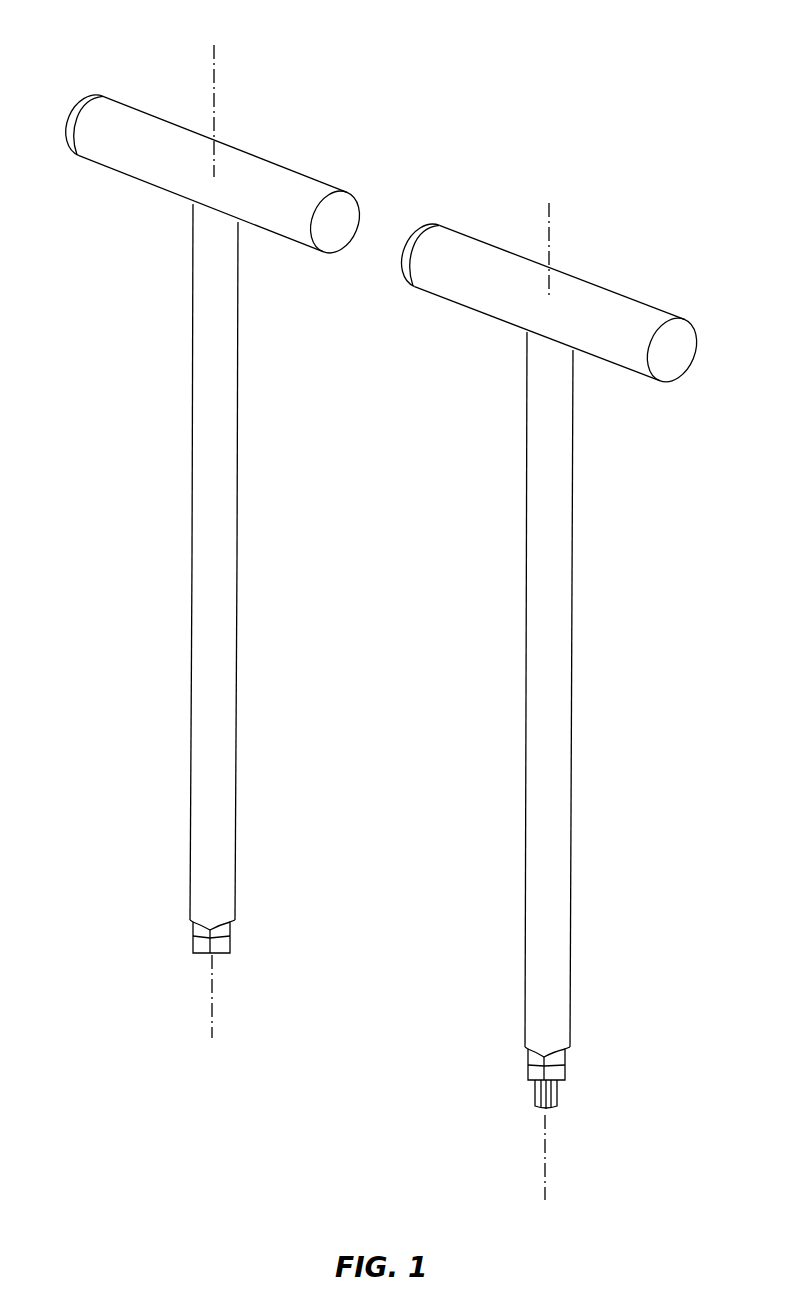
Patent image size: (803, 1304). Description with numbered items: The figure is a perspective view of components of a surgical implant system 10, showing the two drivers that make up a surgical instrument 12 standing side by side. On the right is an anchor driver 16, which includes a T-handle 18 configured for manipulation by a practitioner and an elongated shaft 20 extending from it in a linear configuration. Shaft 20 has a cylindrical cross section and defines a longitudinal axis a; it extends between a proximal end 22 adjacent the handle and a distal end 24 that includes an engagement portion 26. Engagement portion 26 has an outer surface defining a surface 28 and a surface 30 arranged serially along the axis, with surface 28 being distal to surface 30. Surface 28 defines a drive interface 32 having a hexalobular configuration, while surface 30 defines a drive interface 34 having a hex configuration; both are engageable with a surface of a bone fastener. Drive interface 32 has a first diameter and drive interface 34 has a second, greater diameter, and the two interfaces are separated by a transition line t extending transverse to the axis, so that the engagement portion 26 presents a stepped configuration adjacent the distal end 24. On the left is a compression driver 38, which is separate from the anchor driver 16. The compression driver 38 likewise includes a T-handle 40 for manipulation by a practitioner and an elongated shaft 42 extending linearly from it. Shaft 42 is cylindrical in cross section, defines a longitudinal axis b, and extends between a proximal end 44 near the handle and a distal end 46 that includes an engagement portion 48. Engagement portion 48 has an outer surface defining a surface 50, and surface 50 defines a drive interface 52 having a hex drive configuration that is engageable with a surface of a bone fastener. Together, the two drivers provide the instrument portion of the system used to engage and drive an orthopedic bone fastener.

The surgical implant system 10 is at (721, 771).
The surgical instrument 12 is at (516, 66).
The anchor driver 16 is at (648, 606).
The T-handle 18 is at (602, 303).
The elongated shaft 20 is at (533, 667).
The proximal end 22 is at (570, 423).
The distal end 24 is at (572, 950).
The engagement portion 26 is at (556, 1132).
The surface 28 is at (538, 1107).
The surface 30 is at (535, 1060).
The drive interface 32 is at (560, 1093).
The drive interface 34 is at (553, 1062).
The transition line t is at (560, 1080).
The compression driver 38 is at (116, 420).
The T-handle 40 is at (284, 187).
The elongated shaft 42 is at (240, 483).
The proximal end 44 is at (198, 259).
The distal end 46 is at (200, 683).
The engagement portion 48 is at (197, 971).
The surface 50 is at (233, 932).
The drive interface 52 is at (198, 943).